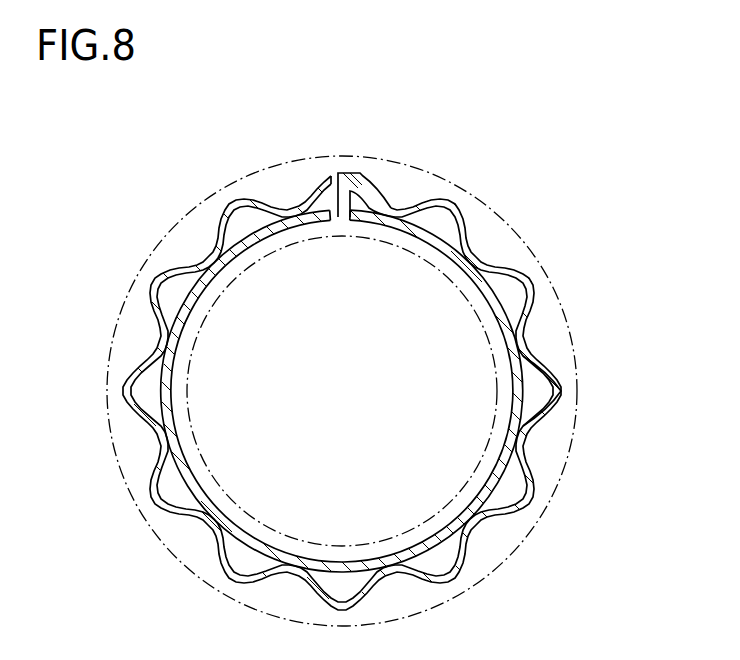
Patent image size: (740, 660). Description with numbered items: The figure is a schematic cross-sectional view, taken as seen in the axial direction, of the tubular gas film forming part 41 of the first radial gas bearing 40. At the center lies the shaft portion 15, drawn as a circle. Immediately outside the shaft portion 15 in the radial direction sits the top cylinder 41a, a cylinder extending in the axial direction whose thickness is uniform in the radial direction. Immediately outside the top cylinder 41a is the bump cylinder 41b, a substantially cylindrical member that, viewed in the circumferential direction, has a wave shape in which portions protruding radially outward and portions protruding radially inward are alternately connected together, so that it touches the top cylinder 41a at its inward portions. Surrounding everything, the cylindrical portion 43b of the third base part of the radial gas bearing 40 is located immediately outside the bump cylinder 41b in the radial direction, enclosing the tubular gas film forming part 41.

The shaft portion 15 is at (488, 262).
The radial gas bearing 40 is at (479, 134).
The tubular gas film forming part 41 is at (542, 288).
The top cylinder 41a is at (520, 393).
The bump cylinder 41b is at (400, 197).
The cylindrical portion 43b is at (213, 187).